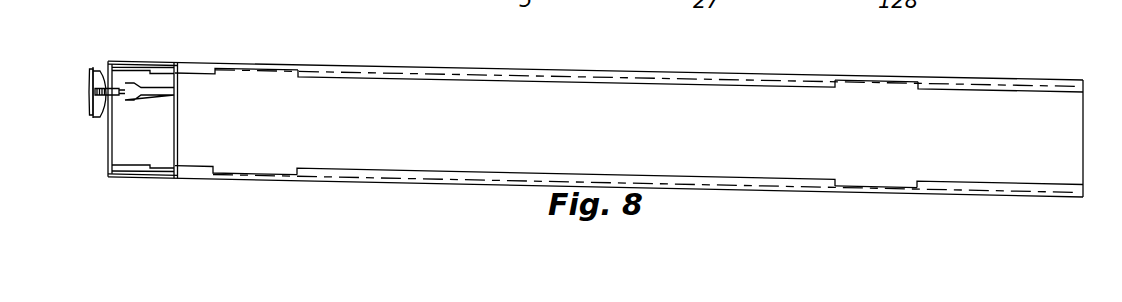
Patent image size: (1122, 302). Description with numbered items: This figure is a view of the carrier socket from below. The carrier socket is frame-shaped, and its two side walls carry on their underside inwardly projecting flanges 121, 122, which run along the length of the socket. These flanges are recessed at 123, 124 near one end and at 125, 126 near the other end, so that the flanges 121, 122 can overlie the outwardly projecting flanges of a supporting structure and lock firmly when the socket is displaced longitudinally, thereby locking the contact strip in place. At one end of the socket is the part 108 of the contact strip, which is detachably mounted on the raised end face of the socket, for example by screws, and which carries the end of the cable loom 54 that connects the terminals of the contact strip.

The cable loom 54 is at (160, 89).
The part of contact strip 108 is at (97, 115).
The inwardly projecting flange 121 is at (595, 117).
The inwardly projecting flange 122 is at (595, 193).
The recess 123 is at (252, 78).
The recess 124 is at (280, 176).
The recess 125 is at (865, 88).
The recess 126 is at (887, 178).